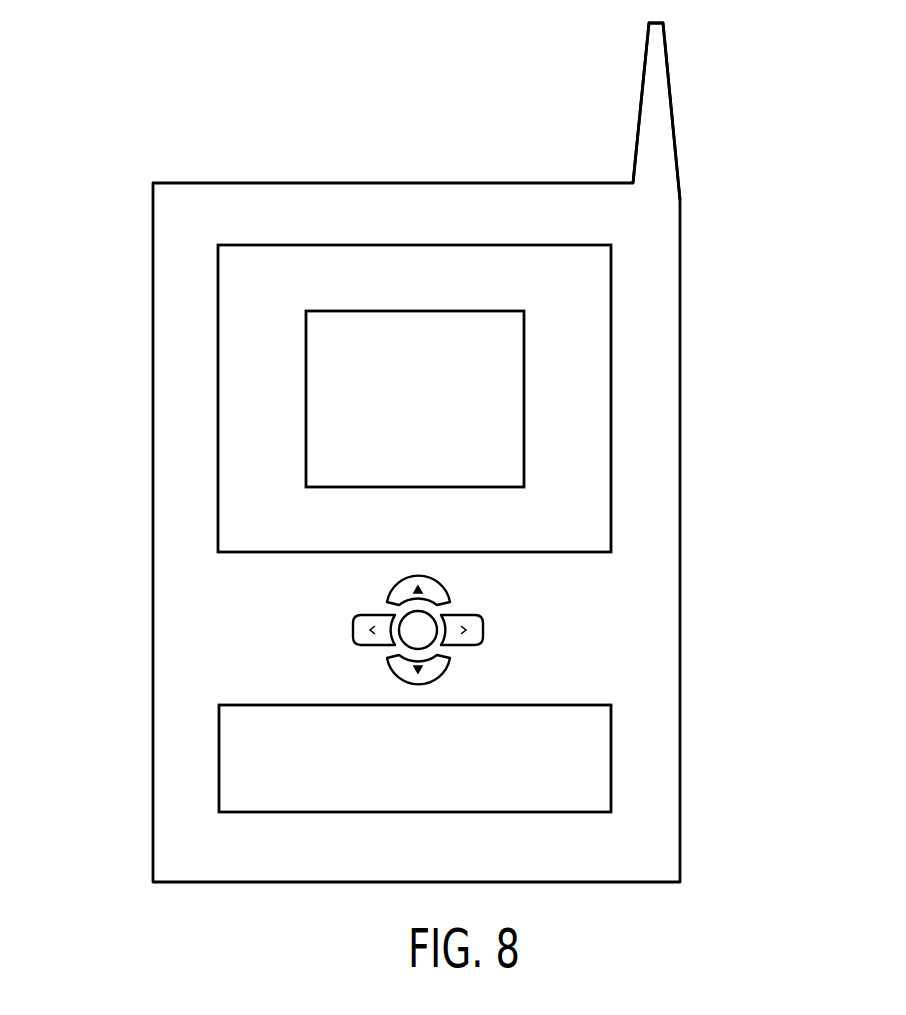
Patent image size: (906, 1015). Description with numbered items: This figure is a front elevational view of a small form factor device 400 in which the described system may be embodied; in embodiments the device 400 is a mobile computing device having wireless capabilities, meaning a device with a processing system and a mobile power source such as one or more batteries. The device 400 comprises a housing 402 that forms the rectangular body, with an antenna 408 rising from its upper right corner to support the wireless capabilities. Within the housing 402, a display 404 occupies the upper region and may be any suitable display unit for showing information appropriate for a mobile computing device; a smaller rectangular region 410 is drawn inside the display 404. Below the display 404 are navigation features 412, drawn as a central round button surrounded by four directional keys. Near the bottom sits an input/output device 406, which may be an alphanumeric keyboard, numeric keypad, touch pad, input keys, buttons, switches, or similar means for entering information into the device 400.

The small form factor device 400 is at (150, 119).
The housing 402 is at (153, 620).
The display 404 is at (611, 302).
The input/output (I/O) device 406 is at (611, 758).
The antenna 408 is at (641, 103).
The display window 410 is at (415, 311).
The navigation features 412 is at (520, 631).